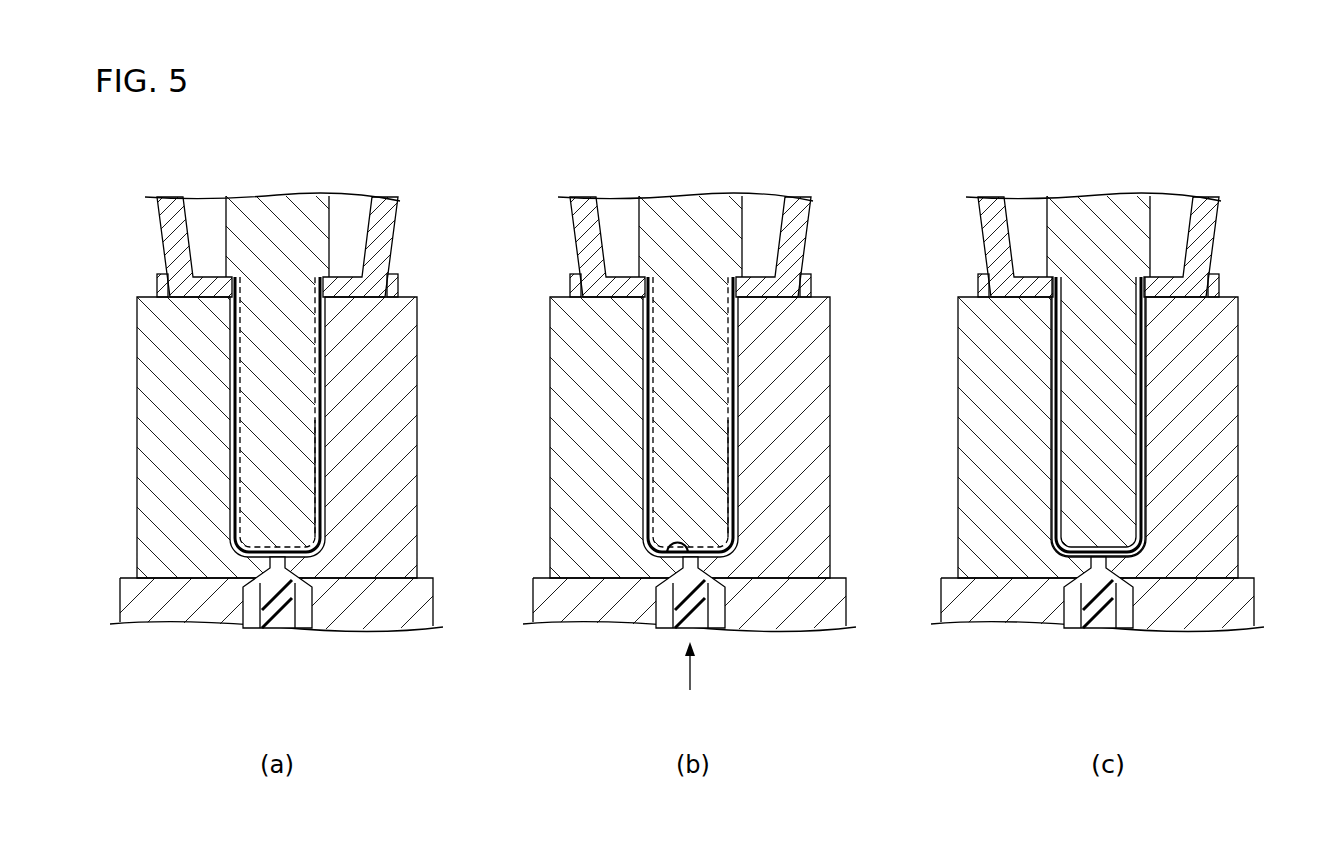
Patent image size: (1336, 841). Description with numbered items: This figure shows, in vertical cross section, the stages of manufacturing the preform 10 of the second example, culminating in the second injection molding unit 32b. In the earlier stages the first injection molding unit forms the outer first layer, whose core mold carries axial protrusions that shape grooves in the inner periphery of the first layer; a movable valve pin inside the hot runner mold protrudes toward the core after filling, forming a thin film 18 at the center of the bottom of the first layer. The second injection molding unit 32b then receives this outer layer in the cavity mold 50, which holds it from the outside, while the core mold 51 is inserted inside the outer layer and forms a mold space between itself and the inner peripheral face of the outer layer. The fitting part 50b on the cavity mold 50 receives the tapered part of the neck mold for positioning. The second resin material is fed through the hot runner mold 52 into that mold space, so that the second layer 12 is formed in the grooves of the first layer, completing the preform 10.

The second injection molding unit 32b is at (1148, 147).
The core mold 51 is at (1117, 337).
The cavity mold 50 is at (1128, 437).
The fitting part 50b is at (1065, 278).
The hot runner mold 52 is at (1097, 635).
The second layer 12 is at (1174, 414).
The preform 10 is at (1027, 416).
The thin film 18 is at (652, 617).